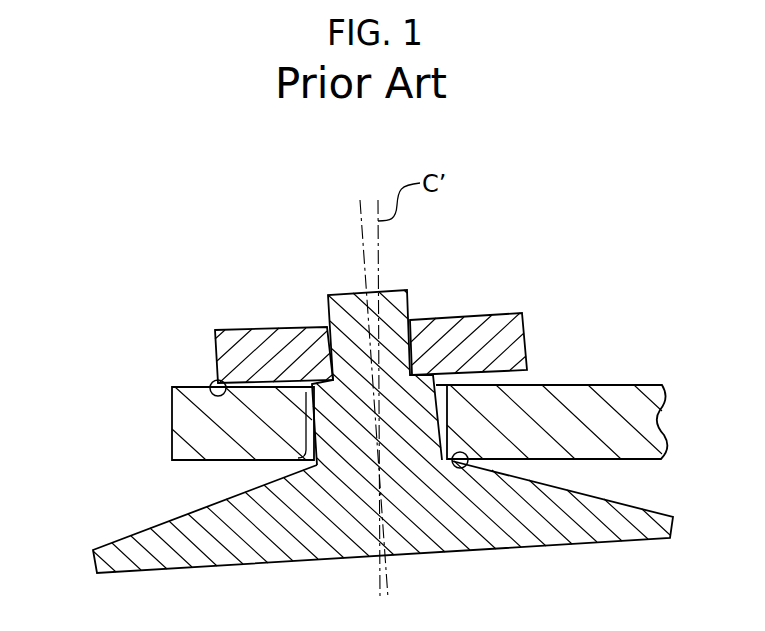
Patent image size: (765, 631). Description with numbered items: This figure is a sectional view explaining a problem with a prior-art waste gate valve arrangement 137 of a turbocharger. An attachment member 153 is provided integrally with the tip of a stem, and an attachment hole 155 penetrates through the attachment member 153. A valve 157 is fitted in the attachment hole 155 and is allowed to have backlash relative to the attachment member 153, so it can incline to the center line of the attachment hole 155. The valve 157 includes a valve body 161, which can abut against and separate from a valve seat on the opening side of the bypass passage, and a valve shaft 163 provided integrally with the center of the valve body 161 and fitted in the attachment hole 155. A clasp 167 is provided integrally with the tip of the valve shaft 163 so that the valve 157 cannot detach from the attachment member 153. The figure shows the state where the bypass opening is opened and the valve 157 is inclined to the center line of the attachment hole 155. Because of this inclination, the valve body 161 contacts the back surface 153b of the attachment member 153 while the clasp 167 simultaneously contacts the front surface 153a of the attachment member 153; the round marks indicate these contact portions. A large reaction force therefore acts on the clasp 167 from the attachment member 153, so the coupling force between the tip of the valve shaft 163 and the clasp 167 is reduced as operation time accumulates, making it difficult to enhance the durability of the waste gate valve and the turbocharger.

The prior art lens mounting structure 137 is at (597, 218).
The attachment member 153 is at (583, 395).
The front surface of the attachment member 153a is at (210, 385).
The back surface of the attachment member 153b is at (593, 462).
The attachment hole 155 is at (443, 430).
The valve 157 is at (88, 398).
The valve body 161 is at (207, 505).
The valve shaft 163 is at (320, 414).
The clasp 167 is at (475, 322).